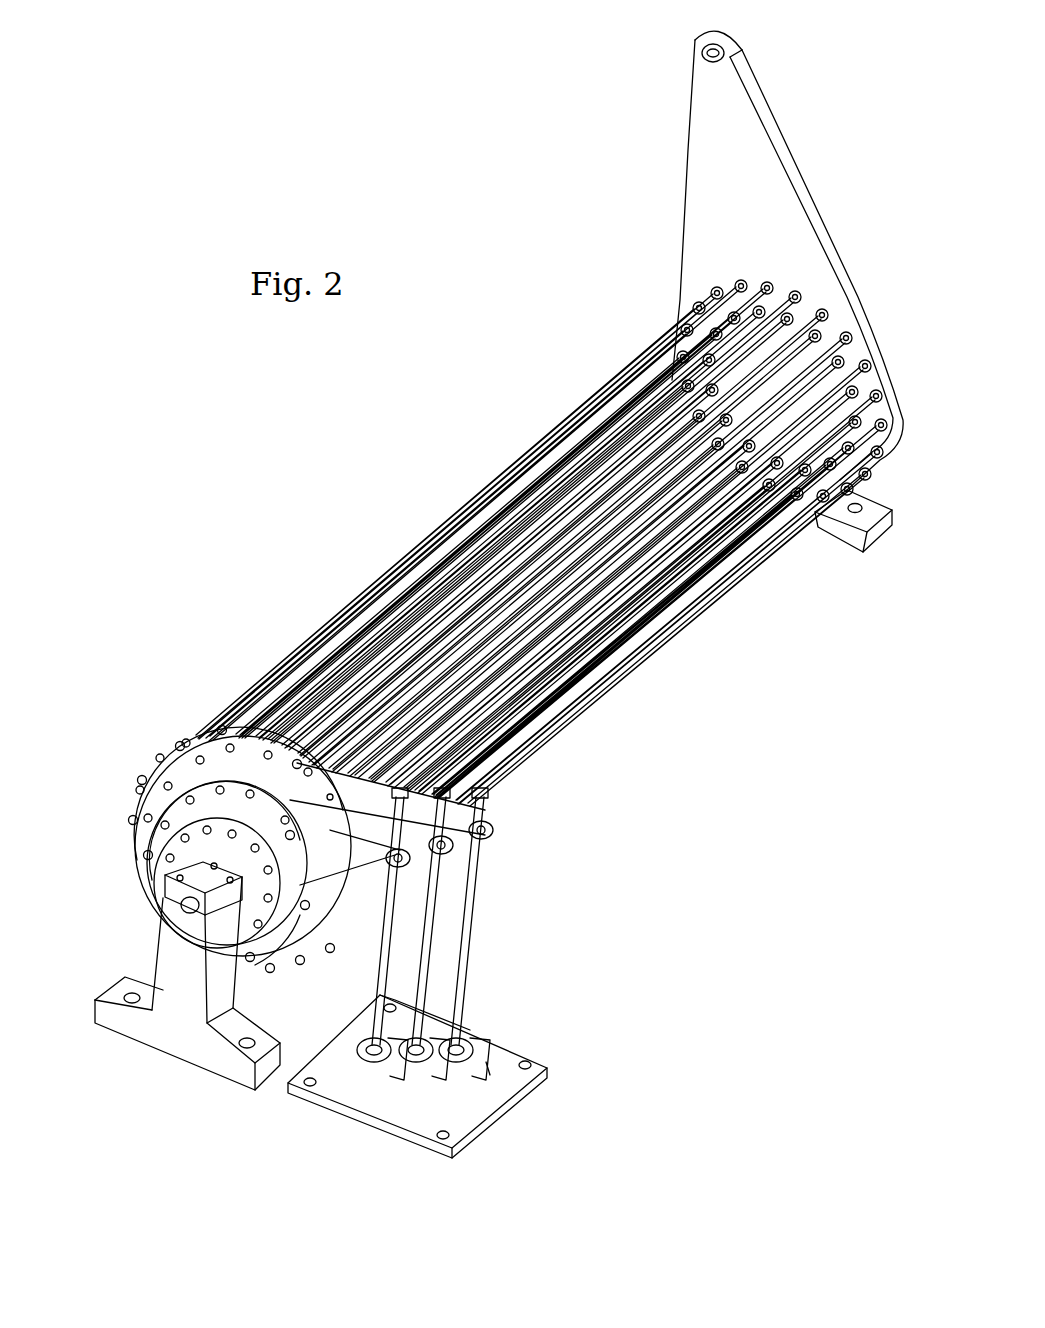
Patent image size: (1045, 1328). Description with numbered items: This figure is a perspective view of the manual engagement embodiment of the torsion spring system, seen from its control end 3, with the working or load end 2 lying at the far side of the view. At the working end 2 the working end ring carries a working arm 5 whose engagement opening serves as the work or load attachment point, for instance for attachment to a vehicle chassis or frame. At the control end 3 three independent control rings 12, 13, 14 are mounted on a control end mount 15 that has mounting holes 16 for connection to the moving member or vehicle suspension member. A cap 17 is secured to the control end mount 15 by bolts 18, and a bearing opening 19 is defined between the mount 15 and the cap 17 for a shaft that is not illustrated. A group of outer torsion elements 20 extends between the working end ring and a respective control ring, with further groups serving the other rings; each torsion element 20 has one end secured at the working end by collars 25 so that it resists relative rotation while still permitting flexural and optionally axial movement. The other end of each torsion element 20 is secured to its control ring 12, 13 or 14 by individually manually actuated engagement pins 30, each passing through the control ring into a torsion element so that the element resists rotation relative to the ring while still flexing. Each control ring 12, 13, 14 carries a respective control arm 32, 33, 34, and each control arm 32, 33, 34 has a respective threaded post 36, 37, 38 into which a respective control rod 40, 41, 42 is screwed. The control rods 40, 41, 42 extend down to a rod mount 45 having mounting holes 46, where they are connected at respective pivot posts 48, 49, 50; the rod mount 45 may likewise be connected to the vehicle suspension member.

The working end 2 is at (836, 179).
The control end 3 is at (563, 888).
The working arm 5 is at (700, 193).
The control ring 12 is at (163, 880).
The control ring 13 is at (155, 812).
The control ring 14 is at (178, 765).
The control end mount 15 is at (175, 1050).
The mounting holes 16 is at (248, 1045).
The cap 17 is at (195, 910).
The bolts 18 is at (208, 912).
The bearing opening 19 is at (183, 912).
The outer torsion elements 20 is at (603, 688).
The collars 25 is at (770, 282).
The engagement pins 30 is at (180, 740).
The control arm 32 is at (410, 865).
The control arm 33 is at (430, 860).
The control arm 34 is at (487, 810).
The threaded post 36 is at (385, 858).
The threaded post 37 is at (452, 848).
The threaded post 38 is at (490, 832).
The control rod 40 is at (372, 1027).
The control rod 41 is at (425, 990).
The control rod 42 is at (463, 1003).
The rod mount 45 is at (470, 1117).
The mounting holes 46 is at (442, 1140).
The pivot post 48 is at (392, 1057).
The pivot post 49 is at (440, 1072).
The pivot post 50 is at (477, 1063).